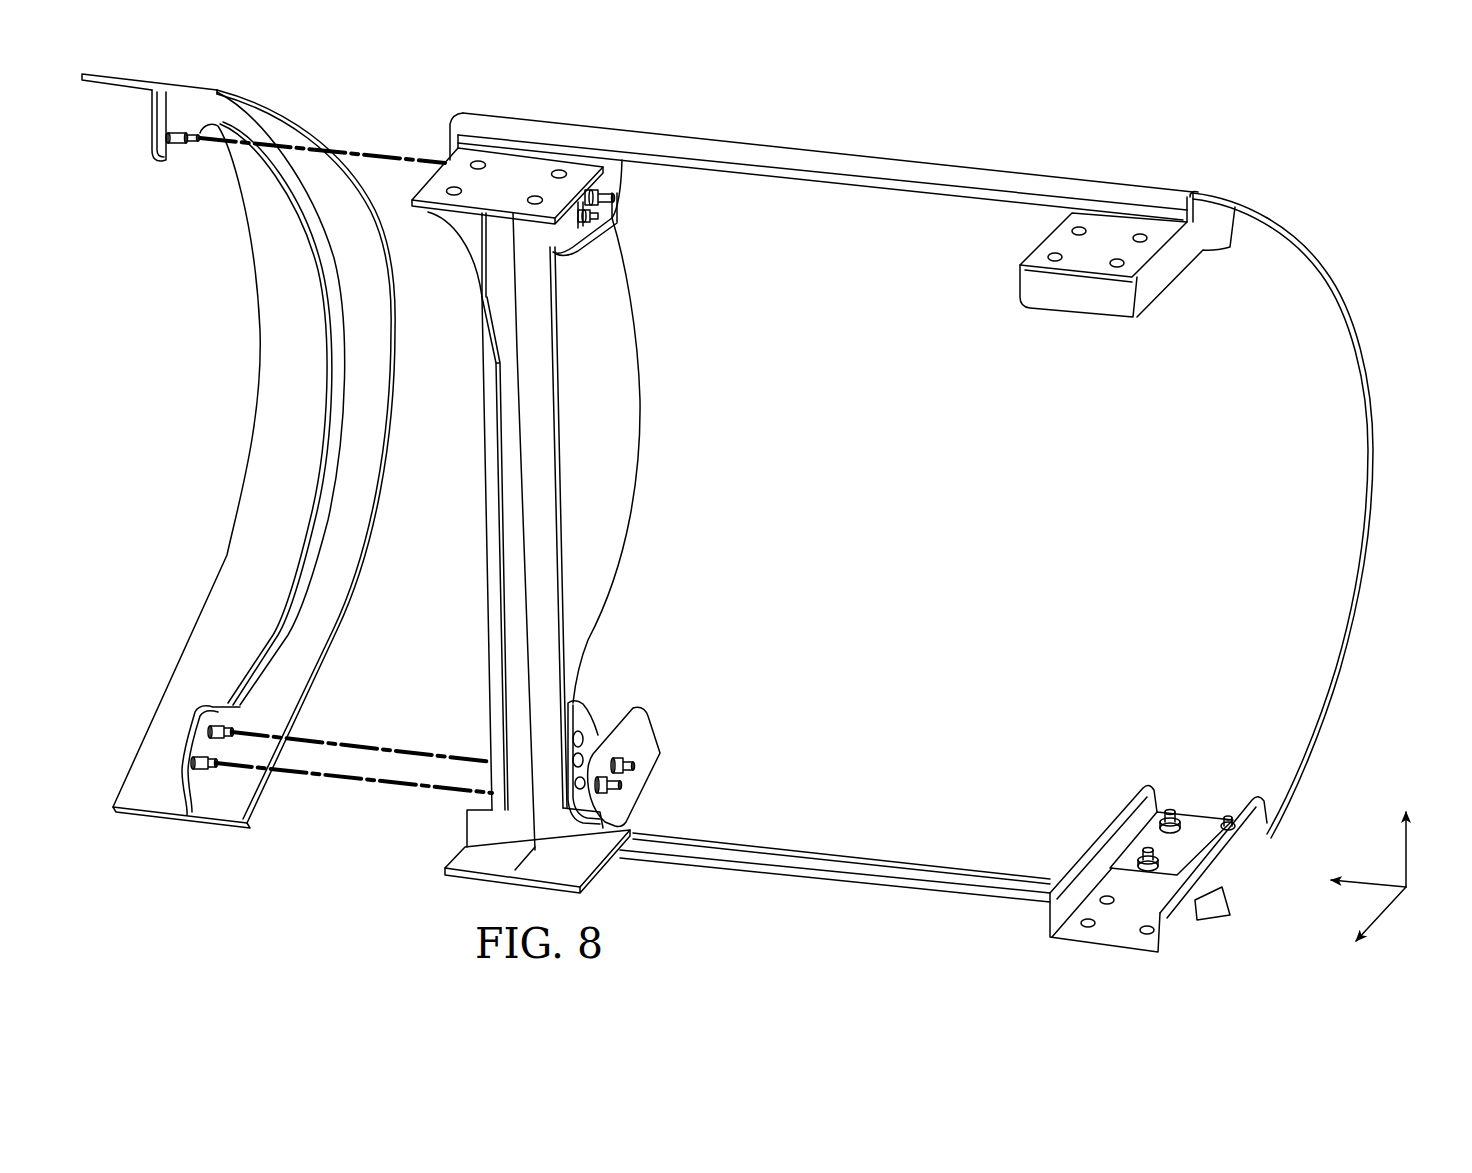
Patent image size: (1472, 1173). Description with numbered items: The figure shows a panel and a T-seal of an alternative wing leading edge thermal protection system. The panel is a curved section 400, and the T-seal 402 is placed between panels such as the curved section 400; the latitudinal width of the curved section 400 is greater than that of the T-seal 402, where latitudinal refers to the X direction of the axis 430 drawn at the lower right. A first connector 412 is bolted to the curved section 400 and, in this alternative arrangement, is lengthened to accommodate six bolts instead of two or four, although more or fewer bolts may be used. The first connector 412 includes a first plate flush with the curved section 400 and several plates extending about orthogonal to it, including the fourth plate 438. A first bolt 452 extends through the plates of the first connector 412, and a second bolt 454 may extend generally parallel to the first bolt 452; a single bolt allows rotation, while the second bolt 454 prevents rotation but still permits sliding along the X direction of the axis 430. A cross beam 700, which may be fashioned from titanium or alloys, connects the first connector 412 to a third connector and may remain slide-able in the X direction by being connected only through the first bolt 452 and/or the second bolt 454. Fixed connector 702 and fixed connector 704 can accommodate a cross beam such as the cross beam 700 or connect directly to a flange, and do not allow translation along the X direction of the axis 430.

The curved section 400 is at (970, 527).
The T-seal 402 is at (256, 391).
The first connector 412 is at (662, 704).
The axis 430 is at (1403, 927).
The fourth plate 438 is at (597, 245).
The first bolt 452 is at (590, 735).
The second bolt 454 is at (573, 782).
The cross beam 700 is at (485, 487).
The fixed connector 702 is at (1090, 823).
The fixed connector 704 is at (1186, 290).